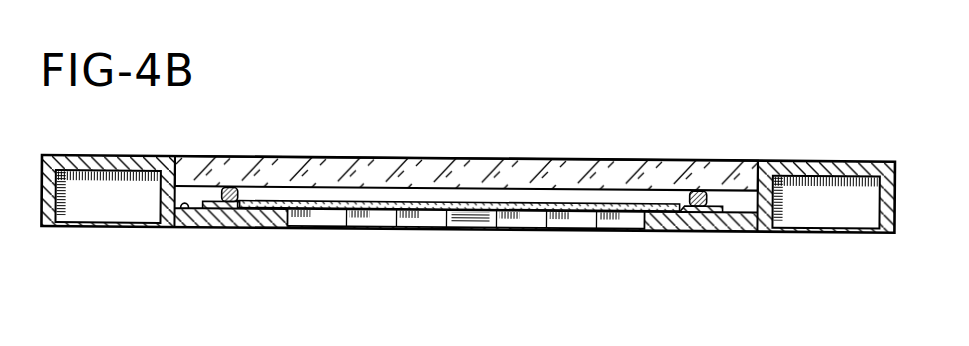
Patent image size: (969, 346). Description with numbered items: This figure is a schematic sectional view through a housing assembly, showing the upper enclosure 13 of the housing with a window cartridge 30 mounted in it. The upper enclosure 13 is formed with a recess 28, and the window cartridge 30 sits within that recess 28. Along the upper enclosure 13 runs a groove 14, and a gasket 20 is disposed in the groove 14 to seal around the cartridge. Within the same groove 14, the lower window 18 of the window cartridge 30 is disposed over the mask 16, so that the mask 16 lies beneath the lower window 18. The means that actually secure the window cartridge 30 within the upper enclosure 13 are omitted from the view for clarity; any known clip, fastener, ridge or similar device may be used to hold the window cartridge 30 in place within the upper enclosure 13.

The upper enclosure 13 is at (806, 152).
The groove 14 is at (226, 203).
The mask 16 is at (553, 211).
The lower window 18 is at (331, 200).
The gasket 20 is at (236, 189).
The recess 28 is at (184, 209).
The window cartridge 30 is at (442, 158).